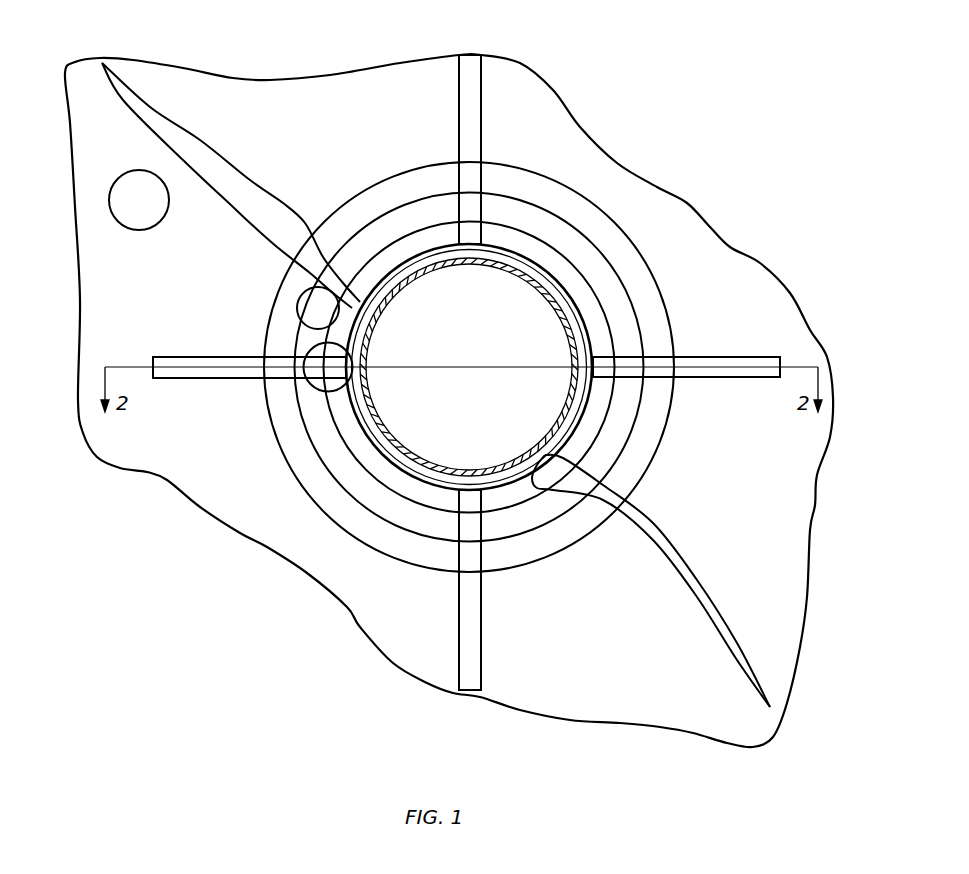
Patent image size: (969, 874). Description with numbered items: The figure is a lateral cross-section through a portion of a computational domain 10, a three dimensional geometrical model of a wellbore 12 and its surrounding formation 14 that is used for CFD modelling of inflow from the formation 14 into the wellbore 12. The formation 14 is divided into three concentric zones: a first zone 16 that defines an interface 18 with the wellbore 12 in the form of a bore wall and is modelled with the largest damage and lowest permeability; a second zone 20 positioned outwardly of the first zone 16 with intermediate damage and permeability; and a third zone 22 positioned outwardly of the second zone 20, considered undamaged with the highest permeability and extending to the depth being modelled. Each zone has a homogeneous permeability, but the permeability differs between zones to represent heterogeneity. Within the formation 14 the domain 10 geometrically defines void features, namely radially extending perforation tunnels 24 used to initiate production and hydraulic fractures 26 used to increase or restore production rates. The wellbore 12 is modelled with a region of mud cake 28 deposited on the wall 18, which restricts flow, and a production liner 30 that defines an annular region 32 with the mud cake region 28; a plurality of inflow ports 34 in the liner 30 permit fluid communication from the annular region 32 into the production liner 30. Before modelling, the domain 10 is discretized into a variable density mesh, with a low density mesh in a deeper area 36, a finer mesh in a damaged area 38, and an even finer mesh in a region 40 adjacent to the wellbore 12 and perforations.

The computational domain 10 is at (222, 667).
The wellbore 12 is at (482, 444).
The formation 14 is at (556, 149).
The first zone 16 is at (380, 503).
The interface 18 is at (388, 462).
The second zone 20 is at (321, 492).
The third zone 22 is at (248, 491).
The perforation tunnels 24 is at (472, 55).
The hydraulic fractures 26 is at (220, 168).
The mud cake region 28 is at (412, 490).
The production liner 30 is at (527, 457).
The annular region 32 is at (442, 480).
The inflow ports 34 is at (467, 266).
The area 36 is at (152, 210).
The area 38 is at (312, 303).
The region 40 is at (350, 372).